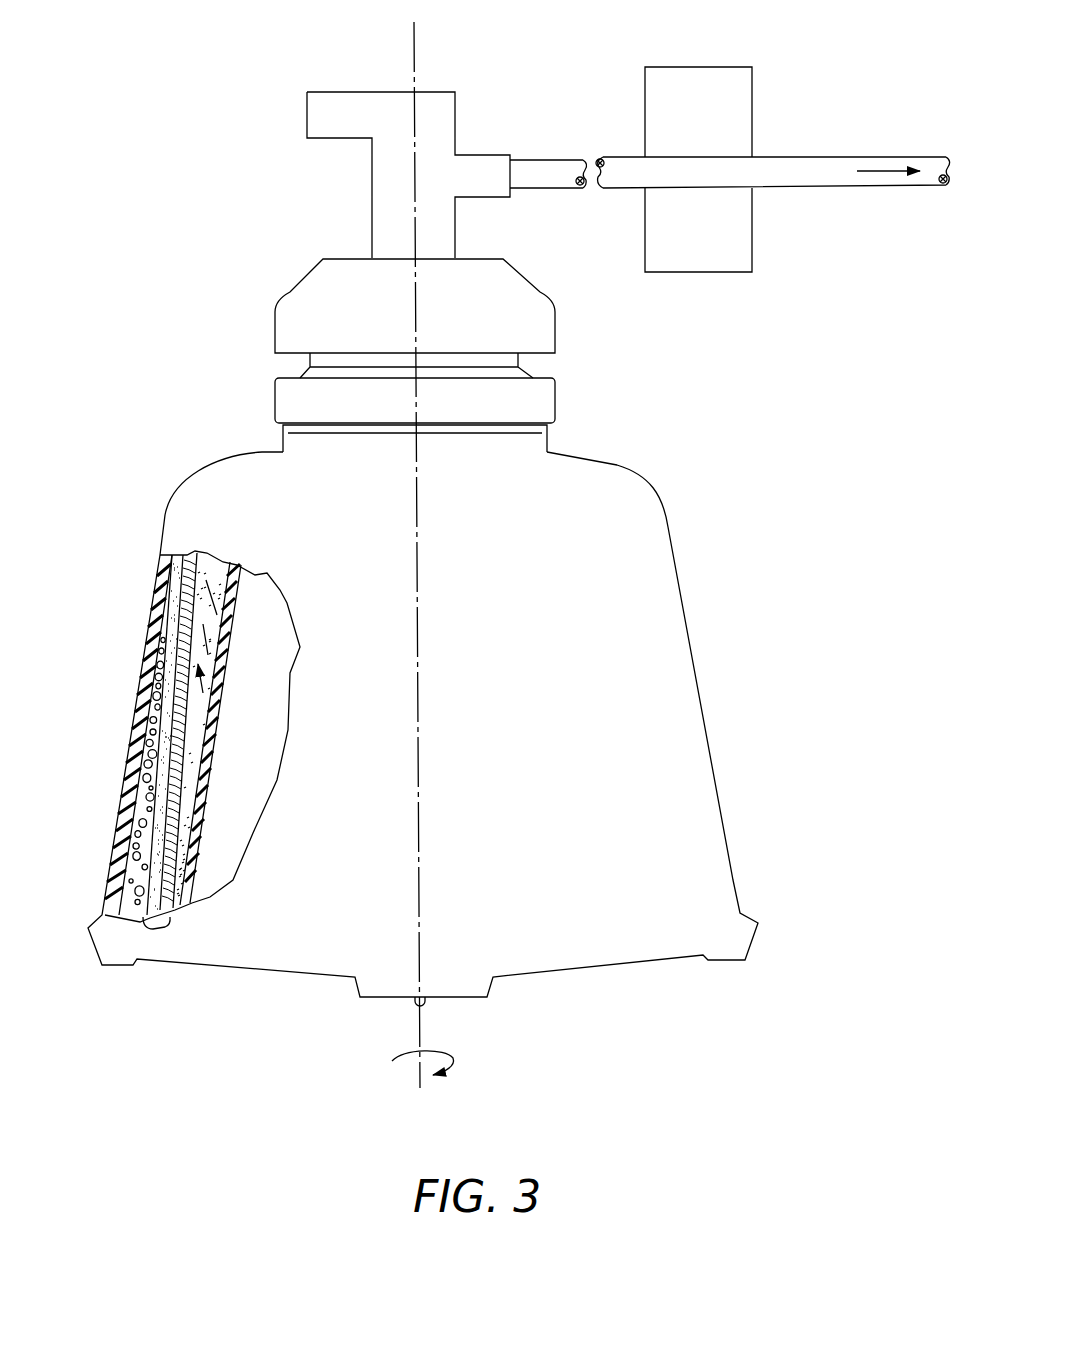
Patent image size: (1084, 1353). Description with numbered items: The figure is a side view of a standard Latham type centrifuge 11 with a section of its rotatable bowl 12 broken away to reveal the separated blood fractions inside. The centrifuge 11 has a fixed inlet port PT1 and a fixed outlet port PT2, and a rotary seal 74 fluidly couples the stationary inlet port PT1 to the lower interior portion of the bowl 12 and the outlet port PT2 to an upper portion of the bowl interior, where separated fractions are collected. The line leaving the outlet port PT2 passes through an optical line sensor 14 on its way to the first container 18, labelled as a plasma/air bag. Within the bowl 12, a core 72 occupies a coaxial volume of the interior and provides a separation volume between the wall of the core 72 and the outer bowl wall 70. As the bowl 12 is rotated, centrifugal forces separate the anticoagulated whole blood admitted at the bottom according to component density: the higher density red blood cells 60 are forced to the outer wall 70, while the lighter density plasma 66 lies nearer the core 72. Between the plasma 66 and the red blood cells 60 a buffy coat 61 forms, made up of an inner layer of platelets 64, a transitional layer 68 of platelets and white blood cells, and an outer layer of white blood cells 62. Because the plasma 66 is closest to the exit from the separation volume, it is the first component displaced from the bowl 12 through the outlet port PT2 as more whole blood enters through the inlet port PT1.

The centrifuge 11 is at (691, 419).
The bowl 12 is at (685, 582).
The optical line sensor 14 is at (710, 64).
The first container 18 is at (773, 133).
The red blood cells 60 is at (166, 686).
The buffy coat 61 is at (157, 930).
The outer layer of WBCs 62 is at (172, 713).
The inner layer of platelets 64 is at (155, 762).
The plasma 66 is at (206, 737).
The transitional layer 68 is at (186, 791).
The outer bowl wall 70 is at (152, 581).
The core 72 is at (236, 618).
The rotary seal 74 is at (526, 359).
The inlet port PT1 is at (339, 90).
The outlet port PT2 is at (486, 151).